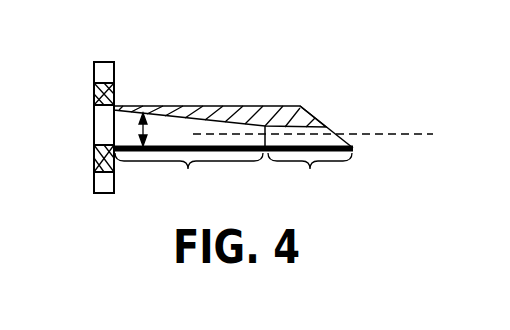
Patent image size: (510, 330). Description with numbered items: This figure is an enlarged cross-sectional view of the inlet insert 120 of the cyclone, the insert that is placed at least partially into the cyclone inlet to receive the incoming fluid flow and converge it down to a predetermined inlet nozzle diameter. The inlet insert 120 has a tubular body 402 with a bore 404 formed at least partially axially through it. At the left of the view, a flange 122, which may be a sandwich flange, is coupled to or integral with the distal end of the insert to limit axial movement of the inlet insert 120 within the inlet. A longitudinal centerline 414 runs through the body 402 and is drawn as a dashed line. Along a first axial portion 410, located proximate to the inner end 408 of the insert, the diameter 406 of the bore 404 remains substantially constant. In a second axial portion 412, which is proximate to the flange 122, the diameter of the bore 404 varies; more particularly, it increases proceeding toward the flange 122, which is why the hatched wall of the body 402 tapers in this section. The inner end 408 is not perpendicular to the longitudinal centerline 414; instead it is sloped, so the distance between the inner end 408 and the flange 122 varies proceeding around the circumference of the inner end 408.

The inlet insert 120 is at (232, 59).
The flange 122 is at (95, 88).
The tubular body 402 is at (275, 107).
The bore 404 is at (110, 129).
The diameter of the bore 406 is at (142, 133).
The inner end 408 is at (321, 124).
The first axial portion 410 is at (310, 176).
The second axial portion 412 is at (189, 177).
The longitudinal centerline 414 is at (412, 136).